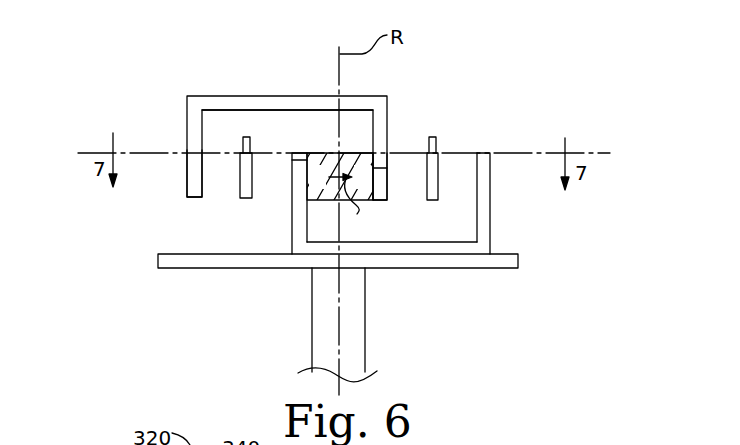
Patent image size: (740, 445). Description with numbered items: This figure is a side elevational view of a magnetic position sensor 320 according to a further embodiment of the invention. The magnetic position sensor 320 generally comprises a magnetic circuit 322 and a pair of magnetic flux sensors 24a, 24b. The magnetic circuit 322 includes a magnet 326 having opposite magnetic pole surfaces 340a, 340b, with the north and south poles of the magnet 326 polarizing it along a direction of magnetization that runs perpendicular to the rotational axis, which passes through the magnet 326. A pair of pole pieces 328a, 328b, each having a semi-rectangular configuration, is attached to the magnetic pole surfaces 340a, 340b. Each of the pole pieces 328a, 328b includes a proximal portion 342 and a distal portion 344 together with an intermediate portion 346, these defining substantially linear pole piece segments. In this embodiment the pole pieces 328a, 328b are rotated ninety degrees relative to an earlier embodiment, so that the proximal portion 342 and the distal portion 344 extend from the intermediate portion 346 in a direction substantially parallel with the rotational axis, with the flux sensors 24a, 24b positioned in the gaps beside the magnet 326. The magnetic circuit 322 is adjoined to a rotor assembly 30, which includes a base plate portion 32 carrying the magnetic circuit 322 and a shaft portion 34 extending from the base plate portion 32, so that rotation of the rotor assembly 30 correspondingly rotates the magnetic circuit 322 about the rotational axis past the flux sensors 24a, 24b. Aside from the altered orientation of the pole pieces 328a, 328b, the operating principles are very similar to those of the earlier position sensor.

The magnetic position sensor 320 is at (133, 68).
The pole piece 328a is at (164, 120).
The pole piece 328b is at (518, 243).
The magnetic pole surface 340a is at (383, 150).
The magnetic pole surface 340b is at (302, 168).
The proximal portion 342 is at (296, 160).
The intermediate portion 346 is at (310, 104).
The distal portion 344 is at (195, 188).
The magnet 326 is at (358, 122).
The magnetic circuit 322 is at (515, 118).
The magnetic flux sensor 24a is at (225, 195).
The magnetic flux sensor 24b is at (454, 188).
The rotor assembly 30 is at (407, 297).
The base plate portion 32 is at (524, 274).
The shaft portion 34 is at (368, 355).